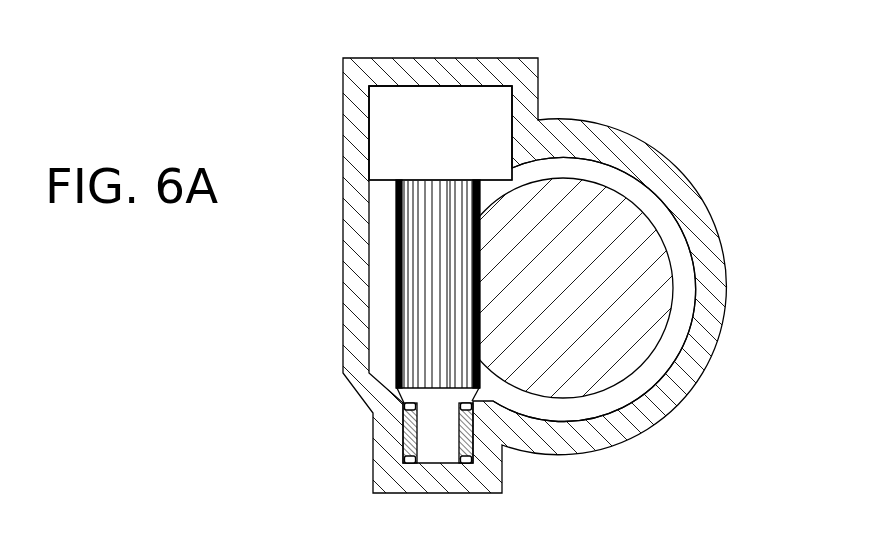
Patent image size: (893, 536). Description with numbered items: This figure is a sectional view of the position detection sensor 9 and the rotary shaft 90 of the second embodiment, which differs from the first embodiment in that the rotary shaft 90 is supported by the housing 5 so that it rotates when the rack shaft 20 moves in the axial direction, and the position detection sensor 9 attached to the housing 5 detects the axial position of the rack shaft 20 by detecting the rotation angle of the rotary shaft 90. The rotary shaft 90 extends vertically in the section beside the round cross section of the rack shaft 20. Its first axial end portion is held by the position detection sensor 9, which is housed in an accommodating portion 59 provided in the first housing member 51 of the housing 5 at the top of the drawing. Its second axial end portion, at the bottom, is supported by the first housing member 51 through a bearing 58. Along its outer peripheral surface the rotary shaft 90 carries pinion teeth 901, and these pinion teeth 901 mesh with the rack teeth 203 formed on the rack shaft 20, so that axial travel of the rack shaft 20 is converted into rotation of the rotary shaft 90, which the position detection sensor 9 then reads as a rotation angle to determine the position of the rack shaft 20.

The housing 5 is at (620, 87).
The accommodating portion 59 is at (384, 83).
The position detection sensor 9 is at (448, 144).
The first housing member 51 is at (665, 157).
The rack shaft 20 is at (668, 245).
The rack teeth 203 is at (468, 277).
The rotary shaft 90 is at (397, 282).
The pinion teeth 901 is at (395, 293).
The bearing 58 is at (408, 436).